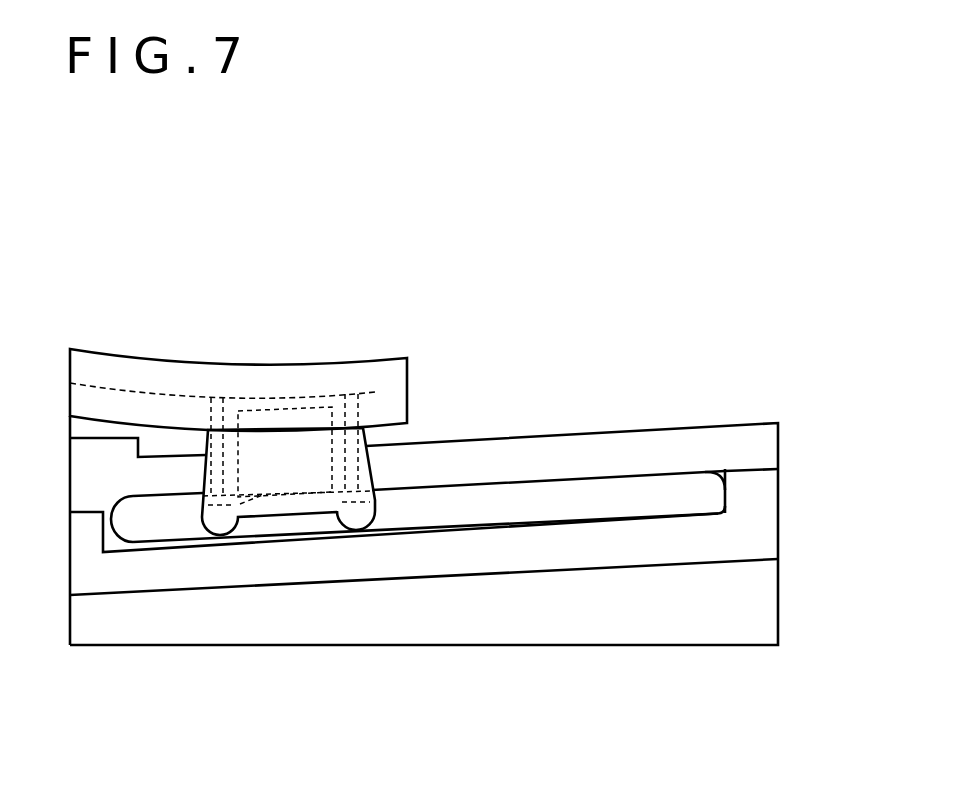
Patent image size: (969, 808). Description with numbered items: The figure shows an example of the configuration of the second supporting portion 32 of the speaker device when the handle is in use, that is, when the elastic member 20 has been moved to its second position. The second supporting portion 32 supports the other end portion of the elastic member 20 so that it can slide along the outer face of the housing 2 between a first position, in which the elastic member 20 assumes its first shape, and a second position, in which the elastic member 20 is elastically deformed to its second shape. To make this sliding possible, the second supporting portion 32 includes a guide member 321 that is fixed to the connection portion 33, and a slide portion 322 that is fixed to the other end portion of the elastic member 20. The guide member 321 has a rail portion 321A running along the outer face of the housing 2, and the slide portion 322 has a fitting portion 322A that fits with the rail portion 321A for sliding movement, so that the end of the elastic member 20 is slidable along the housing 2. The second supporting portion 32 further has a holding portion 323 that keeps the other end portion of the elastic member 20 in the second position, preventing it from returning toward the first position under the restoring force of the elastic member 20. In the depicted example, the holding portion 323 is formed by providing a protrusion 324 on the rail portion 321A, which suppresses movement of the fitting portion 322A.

The housing 2 is at (537, 628).
The elastic member 20 is at (307, 373).
The second supporting portion 32 is at (560, 382).
The guide member 321 is at (471, 466).
The rail portion 321A is at (582, 482).
The slide portion 322 is at (287, 462).
The fitting portion 322A is at (240, 504).
The holding portion 323 is at (186, 502).
The protrusion 324 is at (233, 538).
The connection portion 33 is at (758, 523).